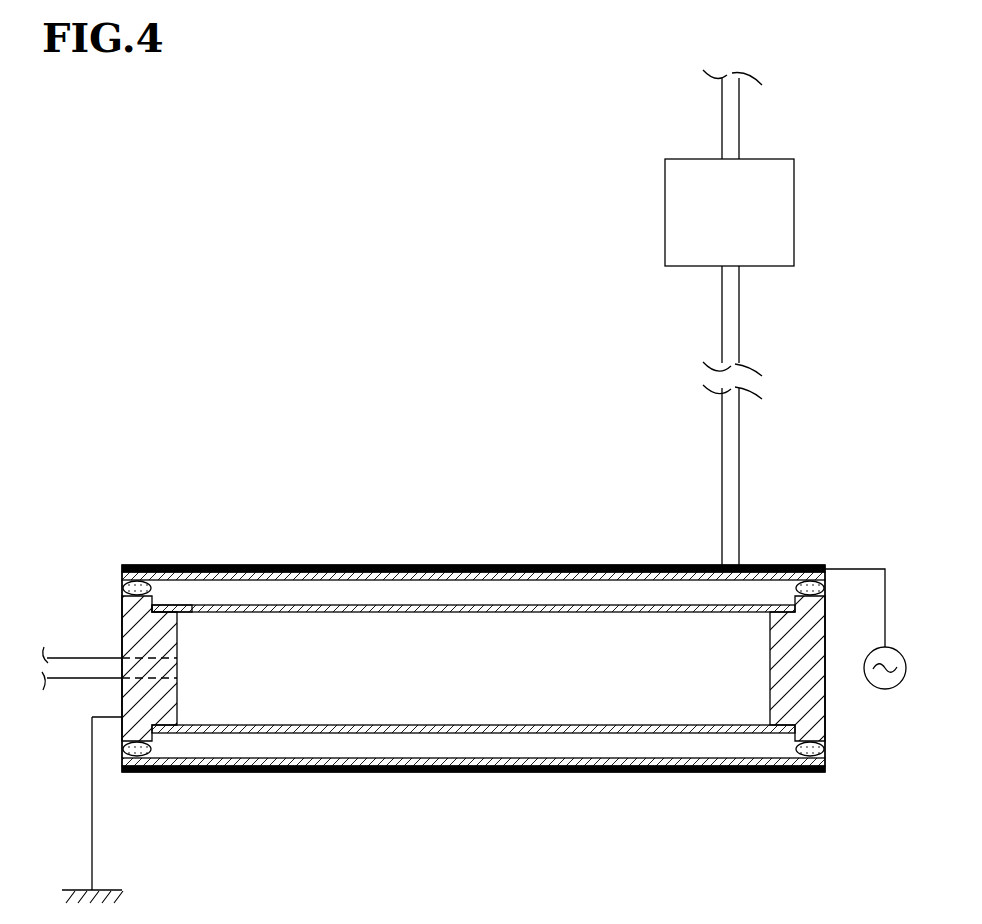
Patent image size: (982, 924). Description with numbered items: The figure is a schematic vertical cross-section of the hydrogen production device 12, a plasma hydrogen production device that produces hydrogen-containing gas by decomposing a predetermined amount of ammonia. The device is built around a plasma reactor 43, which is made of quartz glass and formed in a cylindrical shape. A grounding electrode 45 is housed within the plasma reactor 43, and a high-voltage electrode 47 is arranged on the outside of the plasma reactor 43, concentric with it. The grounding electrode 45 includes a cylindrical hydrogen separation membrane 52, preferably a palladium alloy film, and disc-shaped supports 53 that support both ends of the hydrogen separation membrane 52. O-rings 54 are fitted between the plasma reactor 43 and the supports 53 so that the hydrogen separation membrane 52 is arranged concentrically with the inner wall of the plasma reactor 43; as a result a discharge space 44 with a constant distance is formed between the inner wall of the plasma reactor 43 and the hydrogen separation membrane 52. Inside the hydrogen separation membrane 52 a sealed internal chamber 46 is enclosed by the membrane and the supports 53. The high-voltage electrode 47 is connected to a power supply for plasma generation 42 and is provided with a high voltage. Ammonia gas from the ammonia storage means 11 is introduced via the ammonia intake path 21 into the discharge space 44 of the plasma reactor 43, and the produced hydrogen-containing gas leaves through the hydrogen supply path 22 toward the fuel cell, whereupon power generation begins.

The ammonia storage means 11 is at (782, 193).
The hydrogen production device 12 is at (291, 280).
The ammonia intake path 21 is at (730, 499).
The hydrogen supply path 22 is at (73, 668).
The power supply for plasma generation 42 is at (895, 683).
The plasma reactor 43 is at (312, 565).
The discharge space 44 is at (382, 592).
The grounding electrode 45 is at (455, 595).
The internal chamber 46 is at (417, 703).
The high-voltage electrode 47 is at (512, 565).
The hydrogen separation membrane 52 is at (203, 612).
The supports 53 is at (133, 622).
The O-rings 54 is at (818, 748).